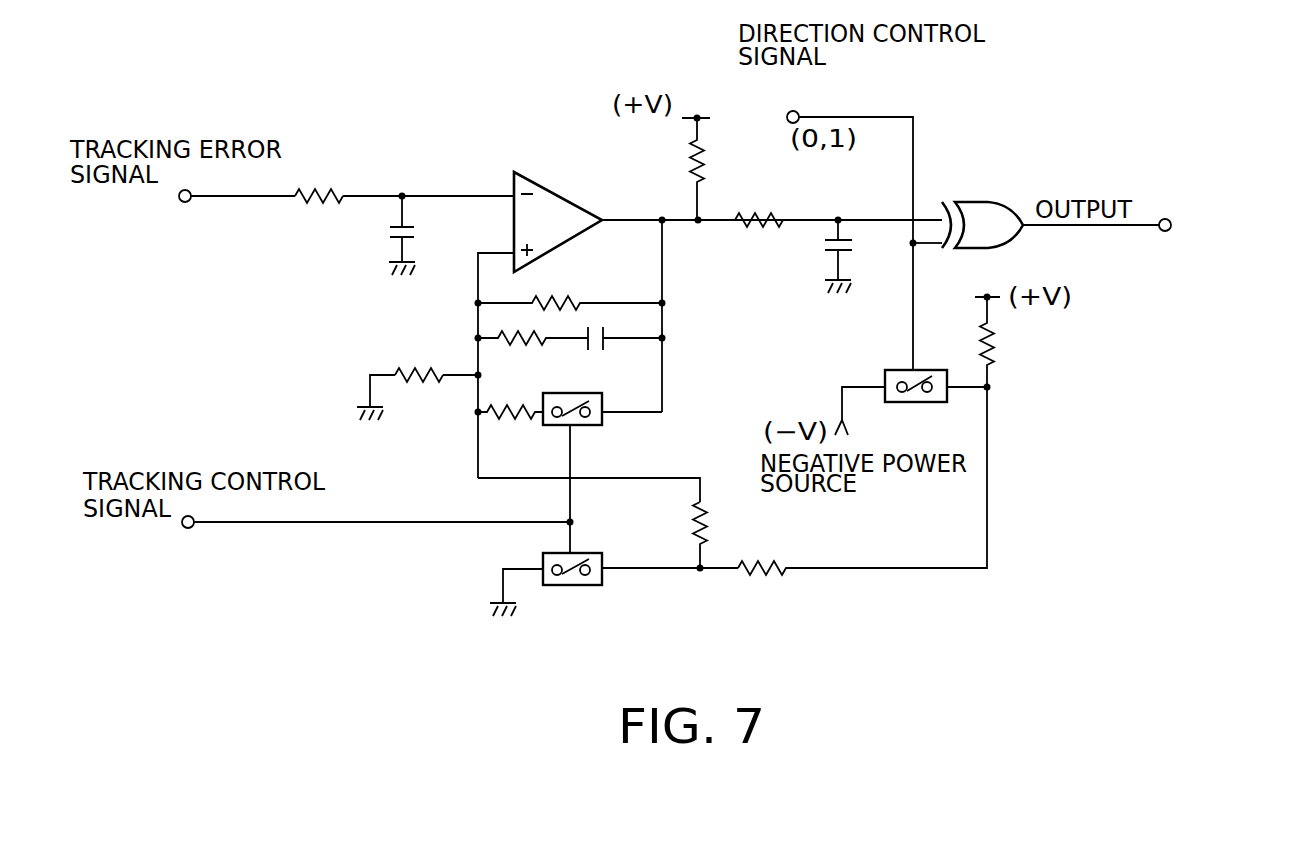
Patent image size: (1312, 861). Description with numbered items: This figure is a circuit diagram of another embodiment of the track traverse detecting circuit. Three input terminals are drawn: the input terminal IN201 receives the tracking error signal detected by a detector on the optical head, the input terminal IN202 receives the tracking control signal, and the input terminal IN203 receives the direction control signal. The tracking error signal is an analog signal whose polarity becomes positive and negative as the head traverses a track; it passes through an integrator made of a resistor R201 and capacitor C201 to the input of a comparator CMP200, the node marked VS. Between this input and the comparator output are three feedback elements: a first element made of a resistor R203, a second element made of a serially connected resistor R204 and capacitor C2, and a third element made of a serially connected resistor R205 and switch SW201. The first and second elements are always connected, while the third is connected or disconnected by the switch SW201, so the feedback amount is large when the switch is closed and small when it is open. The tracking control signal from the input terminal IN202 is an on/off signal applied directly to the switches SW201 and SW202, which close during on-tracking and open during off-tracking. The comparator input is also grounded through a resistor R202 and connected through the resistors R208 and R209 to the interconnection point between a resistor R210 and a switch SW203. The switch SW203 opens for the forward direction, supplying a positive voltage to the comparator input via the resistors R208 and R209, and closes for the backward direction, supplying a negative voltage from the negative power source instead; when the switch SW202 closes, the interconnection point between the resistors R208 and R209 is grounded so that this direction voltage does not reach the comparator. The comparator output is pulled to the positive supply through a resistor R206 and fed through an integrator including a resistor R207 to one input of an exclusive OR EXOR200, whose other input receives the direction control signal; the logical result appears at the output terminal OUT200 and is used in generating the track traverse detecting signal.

The input terminal IN201 is at (221, 211).
The resistor R201 is at (331, 178).
The capacitor C201 is at (436, 235).
The comparator CMP200 is at (573, 210).
The reference voltage node VS is at (478, 276).
The resistor R206 is at (731, 168).
The resistor R207 is at (760, 237).
The input terminal IN203 is at (841, 224).
The exclusive OR EXOR200 is at (987, 200).
The output terminal OUT200 is at (1165, 223).
The resistor R203 is at (570, 289).
The resistor R204 is at (533, 354).
The capacitor C2 is at (622, 355).
The resistor R202 is at (417, 380).
The resistor R205 is at (512, 420).
The switch SW201 is at (608, 473).
The input terminal IN202 is at (361, 540).
The resistor R208 is at (740, 537).
The switch SW202 is at (614, 587).
The resistor R209 is at (862, 496).
The resistor R210 is at (1018, 342).
The switch SW203 is at (911, 404).